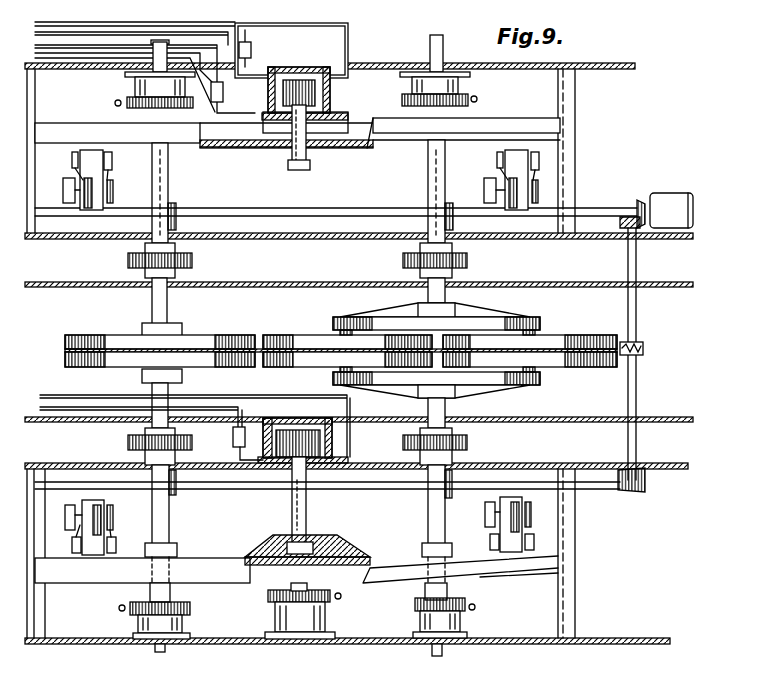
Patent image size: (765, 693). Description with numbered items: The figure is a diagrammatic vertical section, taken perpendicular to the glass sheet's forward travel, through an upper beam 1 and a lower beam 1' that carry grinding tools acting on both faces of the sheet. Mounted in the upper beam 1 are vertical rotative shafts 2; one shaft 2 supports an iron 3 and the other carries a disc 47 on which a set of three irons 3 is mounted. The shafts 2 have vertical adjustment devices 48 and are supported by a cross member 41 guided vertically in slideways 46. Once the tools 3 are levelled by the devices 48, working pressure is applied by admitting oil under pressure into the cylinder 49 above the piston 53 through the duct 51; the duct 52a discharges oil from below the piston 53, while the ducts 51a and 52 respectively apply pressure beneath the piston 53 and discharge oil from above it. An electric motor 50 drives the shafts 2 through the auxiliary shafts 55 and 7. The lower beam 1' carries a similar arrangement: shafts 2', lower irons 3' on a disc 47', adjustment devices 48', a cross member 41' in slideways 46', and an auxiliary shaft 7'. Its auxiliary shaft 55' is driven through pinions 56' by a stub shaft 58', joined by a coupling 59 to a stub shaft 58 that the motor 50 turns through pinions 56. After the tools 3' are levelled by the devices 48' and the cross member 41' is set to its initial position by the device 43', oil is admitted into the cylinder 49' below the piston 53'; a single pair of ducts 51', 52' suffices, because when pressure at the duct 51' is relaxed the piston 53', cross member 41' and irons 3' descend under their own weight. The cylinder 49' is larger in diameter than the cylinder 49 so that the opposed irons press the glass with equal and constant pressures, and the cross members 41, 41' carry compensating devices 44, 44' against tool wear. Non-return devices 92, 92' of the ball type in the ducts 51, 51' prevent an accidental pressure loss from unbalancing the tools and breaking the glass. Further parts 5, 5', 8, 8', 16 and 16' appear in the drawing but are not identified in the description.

The upper beam 1 is at (359, 242).
The lower beam 1' is at (356, 553).
The vertical rotative shafts 2 is at (293, 353).
The vertical rotative shafts 2' is at (298, 533).
The iron 3 is at (341, 326).
The lower tools 3' is at (341, 374).
The gear 5 is at (297, 260).
The gear 5' is at (299, 444).
The auxiliary shaft 7 is at (283, 191).
The auxiliary shaft 7' is at (110, 455).
The bearing 8 is at (310, 202).
The bearing 8' is at (287, 495).
The brake shoe 16 is at (283, 208).
The brake shoe 16' is at (272, 501).
The cross member 41 is at (322, 121).
The cross member 41' is at (296, 589).
The device 43' is at (326, 611).
The compensating device 44 is at (305, 180).
The compensating device 44' is at (303, 513).
The slideways 46 is at (327, 168).
The slideways 46' is at (336, 553).
The disc 47 is at (440, 293).
The disc 47' is at (449, 409).
The vertical adjustment devices 48 is at (301, 71).
The vertical adjustment devices 48' is at (297, 627).
The cylinder 49 is at (318, 100).
The cylinder 49' is at (325, 440).
The electric motor 50 is at (660, 195).
The duct 51 is at (160, 32).
The duct 51' is at (141, 399).
The duct 51a is at (50, 50).
The duct 52 is at (312, 48).
The duct 52' is at (195, 414).
The duct 52a is at (88, 70).
The piston 53 is at (313, 103).
The piston 53' is at (307, 511).
The auxiliary shaft 55 is at (336, 195).
The auxiliary shaft 55' is at (331, 504).
The pinions 56 is at (624, 190).
The pinions 56' is at (645, 491).
The stub shaft 58 is at (655, 354).
The stub shaft 58' is at (661, 385).
The coupling 59 is at (643, 350).
The non-return device 92 is at (259, 69).
The non-return device 92' is at (229, 443).